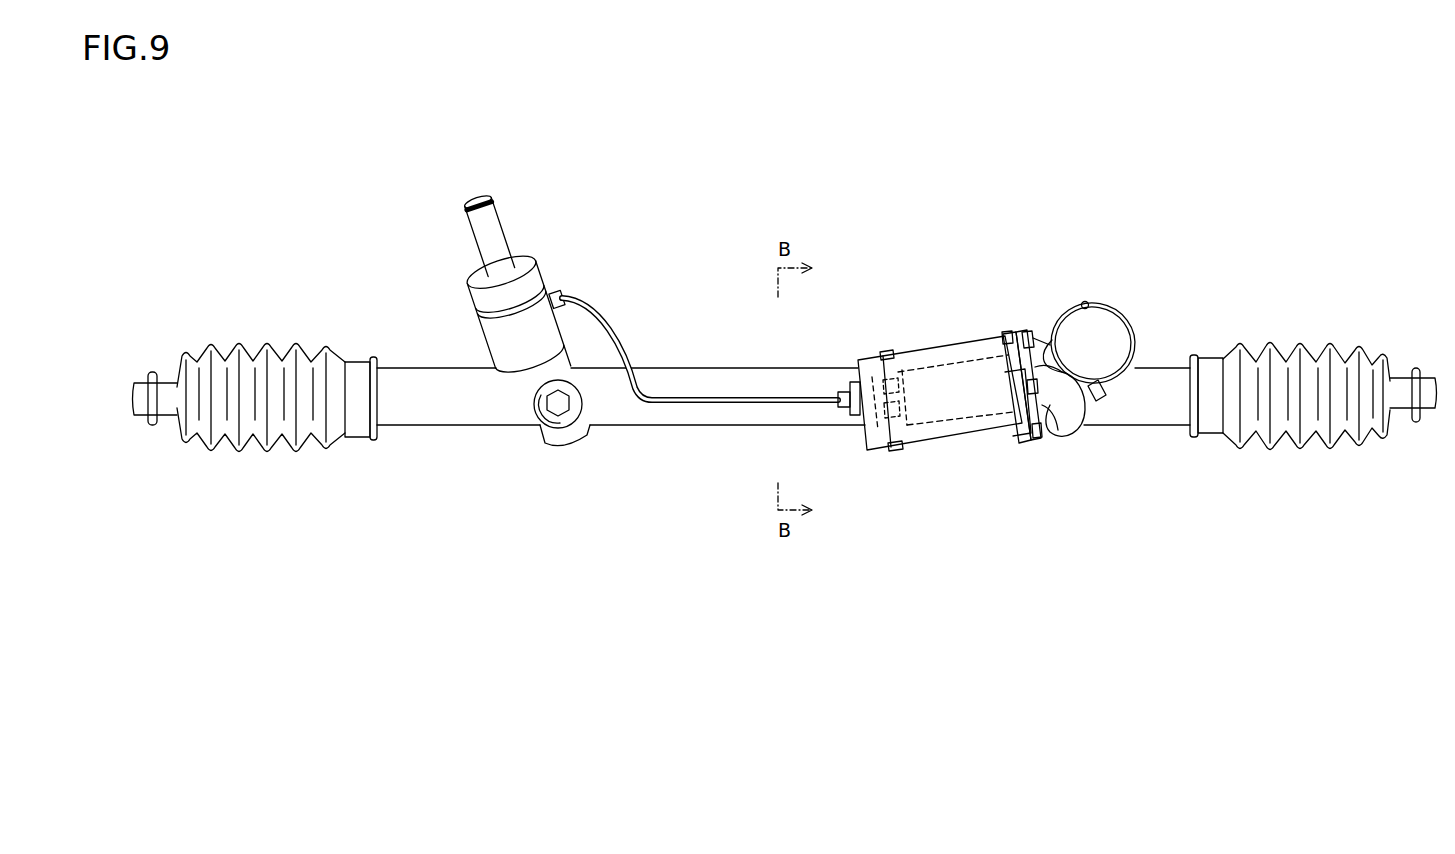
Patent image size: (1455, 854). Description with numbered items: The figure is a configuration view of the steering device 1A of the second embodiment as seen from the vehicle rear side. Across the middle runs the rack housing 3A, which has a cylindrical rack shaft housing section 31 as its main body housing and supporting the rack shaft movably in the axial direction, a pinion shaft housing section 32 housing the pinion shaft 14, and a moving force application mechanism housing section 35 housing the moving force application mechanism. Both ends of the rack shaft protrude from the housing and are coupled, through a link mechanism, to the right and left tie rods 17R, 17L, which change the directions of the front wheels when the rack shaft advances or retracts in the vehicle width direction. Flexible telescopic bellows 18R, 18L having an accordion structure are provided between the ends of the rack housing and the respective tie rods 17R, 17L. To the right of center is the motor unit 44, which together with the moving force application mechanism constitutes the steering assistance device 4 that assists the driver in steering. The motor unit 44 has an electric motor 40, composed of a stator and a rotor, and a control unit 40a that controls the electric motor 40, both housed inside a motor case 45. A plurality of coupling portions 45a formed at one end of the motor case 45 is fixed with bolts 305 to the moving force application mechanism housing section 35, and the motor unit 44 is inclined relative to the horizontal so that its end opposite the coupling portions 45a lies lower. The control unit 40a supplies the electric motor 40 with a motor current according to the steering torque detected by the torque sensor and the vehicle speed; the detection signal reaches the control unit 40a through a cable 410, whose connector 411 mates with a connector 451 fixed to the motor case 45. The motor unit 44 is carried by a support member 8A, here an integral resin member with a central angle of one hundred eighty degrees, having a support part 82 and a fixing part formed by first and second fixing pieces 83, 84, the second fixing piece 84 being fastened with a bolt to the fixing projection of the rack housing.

The steering device 1A is at (485, 467).
The rack housing 3A is at (667, 433).
The steering assistance device 4 is at (1129, 305).
The pinion shaft 14 is at (508, 232).
The left tie rod 17L is at (142, 382).
The right tie rod 17R is at (1427, 373).
The left telescopic bellows 18L is at (262, 348).
The right telescopic bellows 18R is at (1315, 348).
The rack shaft housing section 31 is at (717, 379).
The pinion shaft housing section 32 is at (493, 332).
The moving force application mechanism housing section 35 is at (1062, 316).
The electric motor 40 is at (980, 413).
The control unit 40a is at (884, 437).
The cable 410 is at (613, 333).
The connector 411 is at (843, 404).
The motor unit 44 is at (915, 340).
The motor case 45 is at (928, 347).
The coupling portions 45a is at (1020, 441).
The connector 451 is at (857, 414).
The support member 8A is at (886, 349).
The support part 82 is at (883, 350).
The first fixing piece 83 is at (880, 376).
The second fixing piece 84 is at (893, 424).
The bolts 305 is at (1040, 443).